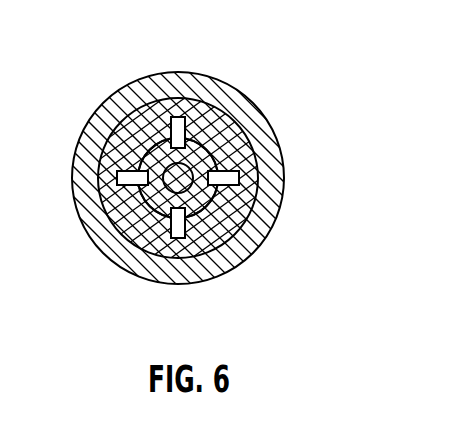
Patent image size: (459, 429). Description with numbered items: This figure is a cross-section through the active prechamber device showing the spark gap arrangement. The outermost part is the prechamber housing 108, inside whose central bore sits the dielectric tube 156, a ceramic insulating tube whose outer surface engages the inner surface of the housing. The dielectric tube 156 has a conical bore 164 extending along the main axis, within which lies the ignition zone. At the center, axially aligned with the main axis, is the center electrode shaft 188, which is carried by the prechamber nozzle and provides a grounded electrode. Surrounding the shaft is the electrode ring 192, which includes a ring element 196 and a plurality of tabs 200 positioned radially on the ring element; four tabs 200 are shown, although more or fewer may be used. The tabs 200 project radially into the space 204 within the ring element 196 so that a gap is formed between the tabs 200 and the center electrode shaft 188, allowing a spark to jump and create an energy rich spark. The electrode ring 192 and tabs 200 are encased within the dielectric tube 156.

The prechamber housing 108 is at (272, 205).
The dielectric tube 156 is at (240, 145).
The conical bore 164 is at (155, 158).
The center electrode shaft 188 is at (188, 168).
The electrode ring 192 is at (213, 152).
The ring element 196 is at (215, 203).
The tabs 200 is at (178, 128).
The space 204 is at (193, 203).